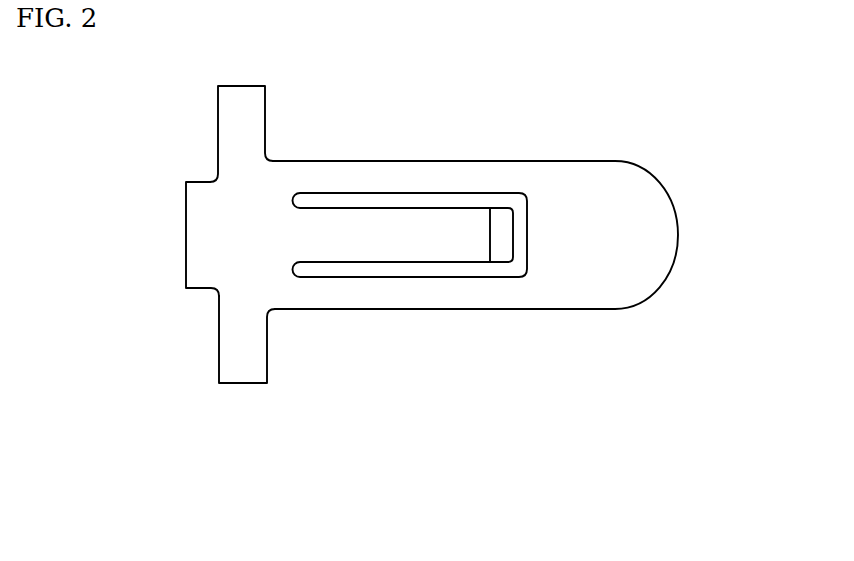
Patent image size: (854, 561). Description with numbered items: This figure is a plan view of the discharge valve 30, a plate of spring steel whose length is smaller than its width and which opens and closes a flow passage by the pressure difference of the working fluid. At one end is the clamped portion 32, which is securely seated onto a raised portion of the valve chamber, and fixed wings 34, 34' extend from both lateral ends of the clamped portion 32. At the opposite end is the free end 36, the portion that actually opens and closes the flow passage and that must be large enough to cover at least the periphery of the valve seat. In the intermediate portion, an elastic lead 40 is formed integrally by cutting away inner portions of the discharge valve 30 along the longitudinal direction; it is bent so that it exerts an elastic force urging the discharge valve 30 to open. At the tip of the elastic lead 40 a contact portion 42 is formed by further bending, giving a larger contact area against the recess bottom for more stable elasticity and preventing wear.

The discharge valve 30 is at (625, 148).
The clamped portion 32 is at (213, 272).
The fixed wing 34 is at (282, 134).
The fixed wing 34' is at (298, 339).
The free end 36 is at (622, 208).
The elastic lead 40 is at (368, 224).
The contact portion 42 is at (498, 213).